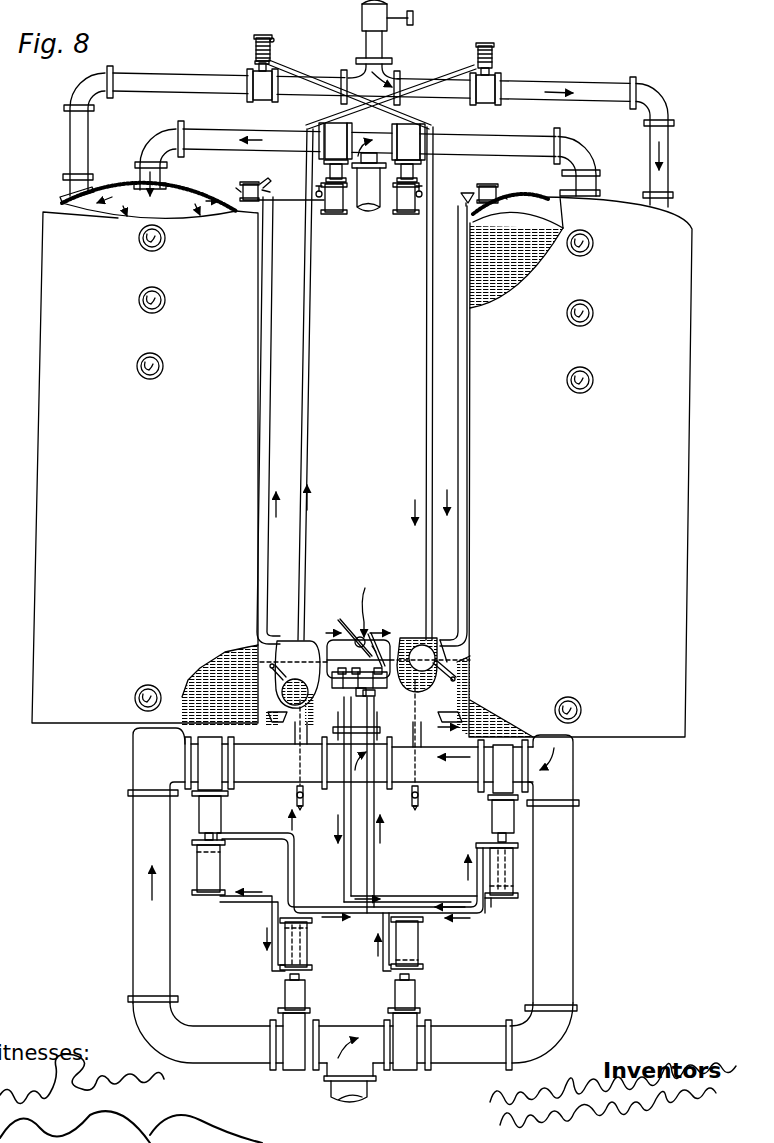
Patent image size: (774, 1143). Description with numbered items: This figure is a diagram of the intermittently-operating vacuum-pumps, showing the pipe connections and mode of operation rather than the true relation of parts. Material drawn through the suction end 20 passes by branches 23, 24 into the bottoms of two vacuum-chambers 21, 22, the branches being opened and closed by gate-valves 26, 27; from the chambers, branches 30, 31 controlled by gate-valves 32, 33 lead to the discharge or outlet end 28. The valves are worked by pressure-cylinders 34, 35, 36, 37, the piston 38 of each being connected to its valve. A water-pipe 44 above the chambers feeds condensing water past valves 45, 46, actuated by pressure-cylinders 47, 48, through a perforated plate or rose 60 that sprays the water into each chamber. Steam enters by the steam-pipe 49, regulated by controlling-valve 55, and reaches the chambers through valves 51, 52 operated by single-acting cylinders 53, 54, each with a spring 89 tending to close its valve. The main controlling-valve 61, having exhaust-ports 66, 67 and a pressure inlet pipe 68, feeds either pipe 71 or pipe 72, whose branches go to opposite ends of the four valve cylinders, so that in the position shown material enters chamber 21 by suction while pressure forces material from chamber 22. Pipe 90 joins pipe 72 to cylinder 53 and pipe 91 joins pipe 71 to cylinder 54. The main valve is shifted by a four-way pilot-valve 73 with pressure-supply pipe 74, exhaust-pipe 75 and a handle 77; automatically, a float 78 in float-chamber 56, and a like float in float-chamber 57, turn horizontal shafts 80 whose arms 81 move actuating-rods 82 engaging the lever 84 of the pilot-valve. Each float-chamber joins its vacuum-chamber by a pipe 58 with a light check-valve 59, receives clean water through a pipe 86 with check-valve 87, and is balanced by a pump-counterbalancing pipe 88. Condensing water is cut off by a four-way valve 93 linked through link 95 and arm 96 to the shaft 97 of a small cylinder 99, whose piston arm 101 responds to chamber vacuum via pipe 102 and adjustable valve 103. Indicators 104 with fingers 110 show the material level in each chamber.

The suction end 20 is at (350, 1091).
The vacuum-chamber 21 is at (145, 467).
The vacuum-chamber 22 is at (580, 467).
The branch 23 is at (199, 895).
The branch 24 is at (544, 899).
The valve 26 is at (327, 1029).
The valve 27 is at (448, 1031).
The discharge or outlet end 28 is at (338, 720).
The branch 30 is at (288, 763).
The branch 31 is at (462, 766).
The valve 32 is at (210, 788).
The valve 33 is at (503, 793).
The pressure-cylinder 34 is at (304, 944).
The pressure-cylinder 35 is at (415, 943).
The pressure-cylinder 36 is at (215, 867).
The pressure-cylinder 37 is at (503, 870).
The piston 38 is at (204, 855).
The water-pipe 44 is at (369, 187).
The valve 45 is at (330, 126).
The valve 46 is at (411, 127).
The pressure-cylinder 47 is at (334, 193).
The pressure-cylinder 48 is at (407, 193).
The steam-pipe 49 is at (375, 59).
The controlling-valve 51 is at (262, 87).
The controlling-valve 52 is at (485, 94).
The pressure-cylinder 53 is at (263, 40).
The pressure-cylinder 54 is at (485, 48).
The controlling-valve 55 is at (378, 15).
The float-chamber 56 is at (297, 664).
The float-chamber 57 is at (422, 657).
The pipe 58 is at (362, 711).
The check-valve 59 is at (282, 722).
The perforated plate or rose 60 is at (569, 213).
The main controlling-valve 61 is at (374, 698).
The exhaust-port 66 is at (358, 659).
The exhaust-port 67 is at (390, 660).
The pressure inlet pipe 68 is at (366, 692).
The pipe 71 is at (344, 801).
The pipe 72 is at (374, 804).
The pilot-valve 73 is at (373, 647).
The pressure-supply pipe 74 is at (366, 610).
The exhaust-pipe 75 is at (356, 655).
The handle 77 is at (346, 626).
The float 78 is at (358, 675).
The horizontal shaft 80 is at (270, 672).
The arm 81 is at (452, 672).
The actuating-rod 82 is at (447, 662).
The lever 84 is at (381, 662).
The pipe 86 is at (302, 806).
The check-valve 87 is at (297, 796).
The pump-counterbalancing pipe 88 is at (273, 313).
The spring 89 is at (273, 41).
The pipe 90 is at (426, 365).
The pipe 91 is at (310, 361).
The four-way valve 93 is at (316, 190).
The link 95 is at (291, 208).
The arm 96 is at (271, 192).
The shaft 97 is at (465, 204).
The cylinder 99 is at (369, 185).
The arm 101 is at (274, 177).
The pipe 102 is at (506, 197).
The valve 103 is at (236, 189).
The indicator 104 is at (377, 340).
The finger 110 is at (153, 311).